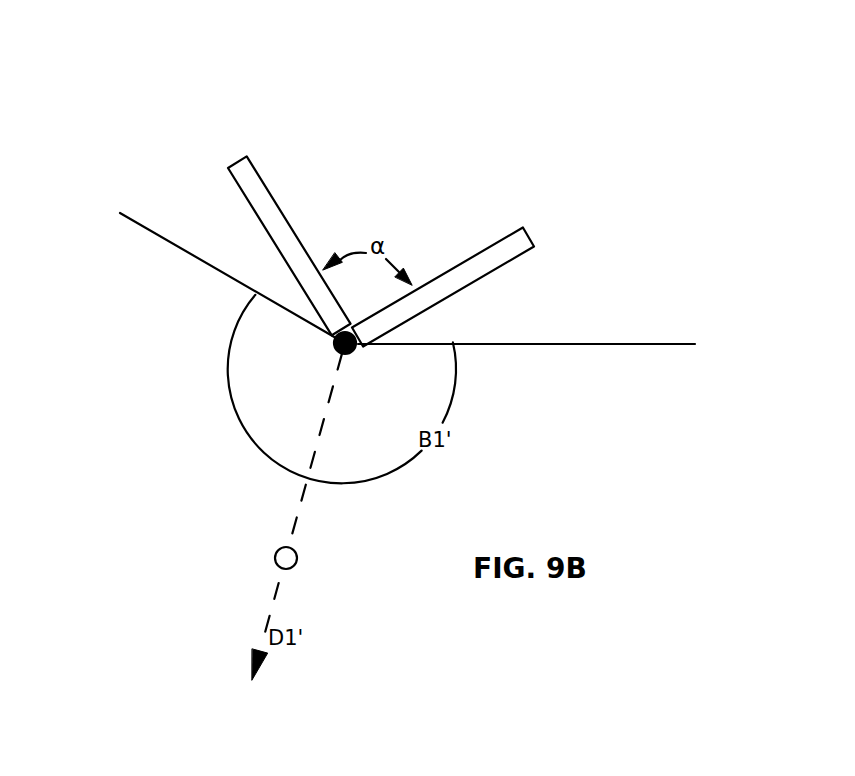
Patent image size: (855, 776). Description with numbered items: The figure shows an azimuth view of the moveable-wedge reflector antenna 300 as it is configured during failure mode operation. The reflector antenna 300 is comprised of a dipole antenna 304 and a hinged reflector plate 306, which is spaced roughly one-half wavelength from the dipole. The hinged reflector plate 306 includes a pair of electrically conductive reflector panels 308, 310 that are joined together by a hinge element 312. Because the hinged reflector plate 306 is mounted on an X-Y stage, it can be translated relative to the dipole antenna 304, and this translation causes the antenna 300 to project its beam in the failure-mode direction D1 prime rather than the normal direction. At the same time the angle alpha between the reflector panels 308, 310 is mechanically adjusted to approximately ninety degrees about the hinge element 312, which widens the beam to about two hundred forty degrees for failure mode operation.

The moveable-wedge reflector antenna 300 is at (661, 84).
The dipole antenna 304 is at (275, 559).
The hinged reflector plate 306 is at (173, 339).
The reflector panel 308 is at (500, 240).
The reflector panel 310 is at (228, 168).
The hinge element 312 is at (353, 352).